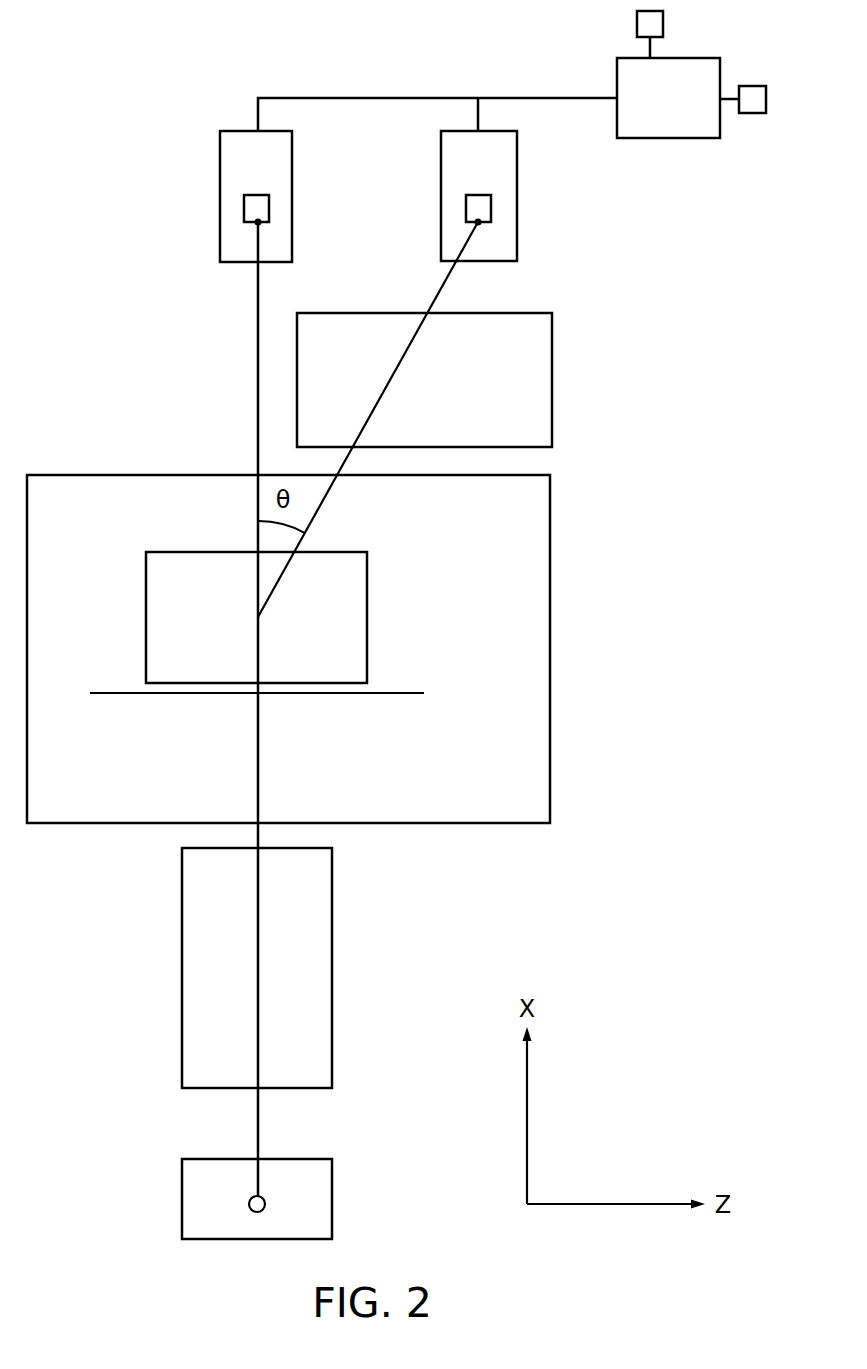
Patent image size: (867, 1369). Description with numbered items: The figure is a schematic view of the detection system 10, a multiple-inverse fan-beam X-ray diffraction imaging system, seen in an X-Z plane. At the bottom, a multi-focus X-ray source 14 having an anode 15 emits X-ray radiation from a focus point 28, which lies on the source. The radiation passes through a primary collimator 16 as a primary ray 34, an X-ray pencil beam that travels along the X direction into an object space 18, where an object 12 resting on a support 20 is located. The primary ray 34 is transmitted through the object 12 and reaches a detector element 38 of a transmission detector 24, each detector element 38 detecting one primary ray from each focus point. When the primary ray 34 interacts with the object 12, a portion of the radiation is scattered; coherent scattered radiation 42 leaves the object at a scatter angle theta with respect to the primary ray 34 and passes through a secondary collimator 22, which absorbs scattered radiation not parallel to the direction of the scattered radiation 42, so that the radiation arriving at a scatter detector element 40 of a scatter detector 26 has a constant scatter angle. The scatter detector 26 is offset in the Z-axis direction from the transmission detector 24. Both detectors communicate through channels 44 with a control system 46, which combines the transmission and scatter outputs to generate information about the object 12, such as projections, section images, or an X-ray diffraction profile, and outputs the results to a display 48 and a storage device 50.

The detection system 10 is at (108, 44).
The object 12 is at (368, 618).
The multi-focus X-ray source 14 is at (332, 1203).
The anode 15 is at (234, 1218).
The primary collimator 16 is at (333, 968).
The object space 18 is at (550, 650).
The support 20 is at (371, 694).
The secondary collimator 22 is at (552, 379).
The transmission detector 24 is at (220, 195).
The scatter detector 26 is at (517, 235).
The focus point 28 is at (266, 1202).
The primary ray 34 is at (258, 787).
The detector element 38 is at (262, 210).
The scatter detector element 40 is at (483, 211).
The scattered radiation 42 is at (453, 275).
The channels 44 is at (257, 115).
The control system 46 is at (650, 110).
The display 48 is at (752, 86).
The storage device 50 is at (637, 22).